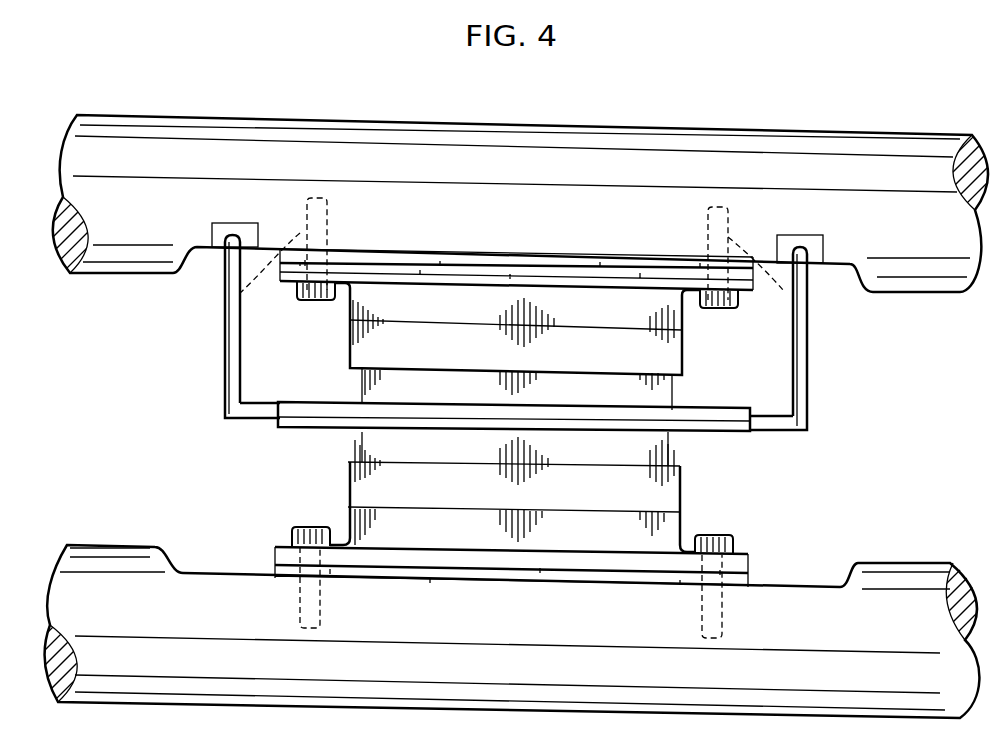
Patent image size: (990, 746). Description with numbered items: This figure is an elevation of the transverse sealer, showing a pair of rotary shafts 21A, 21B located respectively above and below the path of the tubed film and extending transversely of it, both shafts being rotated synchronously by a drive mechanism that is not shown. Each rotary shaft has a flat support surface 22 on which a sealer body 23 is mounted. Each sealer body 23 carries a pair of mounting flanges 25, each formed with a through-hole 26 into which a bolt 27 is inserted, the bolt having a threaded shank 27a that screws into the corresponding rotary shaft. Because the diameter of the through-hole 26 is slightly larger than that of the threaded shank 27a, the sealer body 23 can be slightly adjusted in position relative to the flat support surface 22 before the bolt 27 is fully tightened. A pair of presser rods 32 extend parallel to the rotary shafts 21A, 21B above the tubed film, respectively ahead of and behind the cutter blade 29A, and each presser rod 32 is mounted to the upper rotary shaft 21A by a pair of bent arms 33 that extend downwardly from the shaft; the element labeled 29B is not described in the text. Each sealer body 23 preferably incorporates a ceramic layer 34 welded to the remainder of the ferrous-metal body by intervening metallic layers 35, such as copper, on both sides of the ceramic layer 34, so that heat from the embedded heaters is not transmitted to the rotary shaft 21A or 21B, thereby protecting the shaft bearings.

The rotary shaft 21A is at (887, 147).
The rotary shaft 21B is at (893, 573).
The flat support surface 22 is at (200, 251).
The sealer body 23 is at (682, 340).
The mounting flange 25 is at (283, 285).
The through-hole 26 is at (302, 298).
The bolt 27 is at (320, 302).
The threaded shank 27a is at (230, 297).
The cutter blade 29A is at (673, 390).
The lower connecting member 29B is at (672, 448).
The presser rod 32 is at (300, 425).
The bent arm 33 is at (225, 343).
The ceramic layer 34 is at (432, 268).
The metallic layer 35 is at (525, 278).